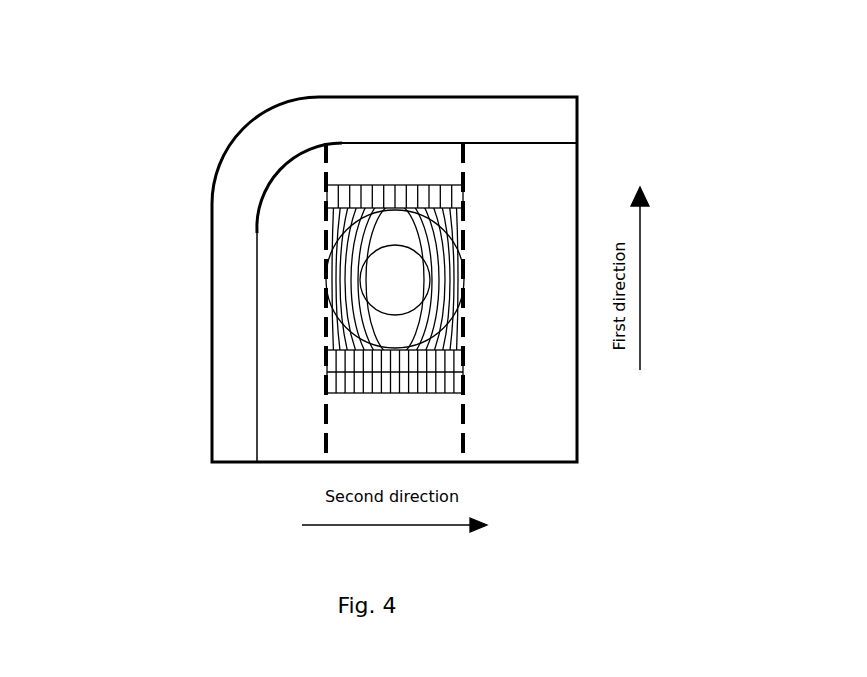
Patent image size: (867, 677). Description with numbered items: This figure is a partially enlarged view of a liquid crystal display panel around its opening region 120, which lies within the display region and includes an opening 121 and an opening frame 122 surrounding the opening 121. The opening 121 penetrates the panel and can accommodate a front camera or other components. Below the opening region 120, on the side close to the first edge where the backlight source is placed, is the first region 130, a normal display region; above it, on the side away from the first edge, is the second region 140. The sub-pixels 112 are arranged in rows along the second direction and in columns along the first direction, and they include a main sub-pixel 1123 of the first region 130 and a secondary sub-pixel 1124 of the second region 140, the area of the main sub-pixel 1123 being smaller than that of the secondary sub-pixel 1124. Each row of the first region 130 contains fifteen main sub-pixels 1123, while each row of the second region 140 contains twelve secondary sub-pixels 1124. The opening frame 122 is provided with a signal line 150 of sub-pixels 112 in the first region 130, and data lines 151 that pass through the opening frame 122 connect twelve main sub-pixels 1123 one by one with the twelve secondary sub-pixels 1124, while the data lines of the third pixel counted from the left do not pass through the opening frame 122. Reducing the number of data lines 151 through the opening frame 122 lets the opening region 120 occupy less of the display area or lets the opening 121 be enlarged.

The signal line 150 is at (289, 300).
The data line 151 is at (345, 212).
The second region 140 is at (353, 160).
The opening region 120 is at (518, 185).
The opening 121 is at (407, 278).
The opening frame 122 is at (413, 223).
The sub-pixel 112 is at (250, 302).
The main sub-pixel 1123 is at (350, 358).
The secondary sub-pixel 1124 is at (328, 238).
The first region 130 is at (395, 415).